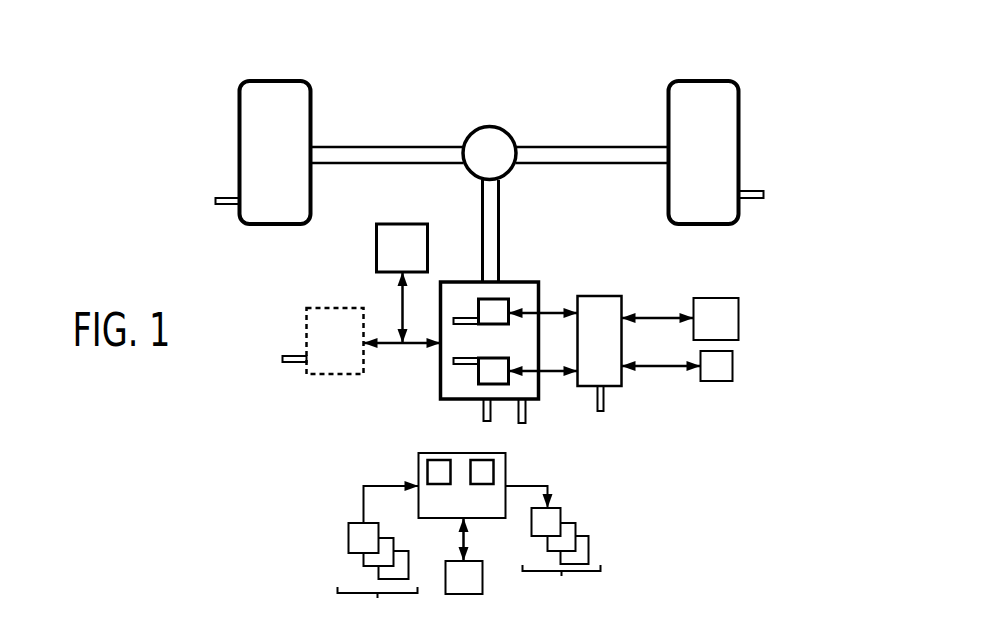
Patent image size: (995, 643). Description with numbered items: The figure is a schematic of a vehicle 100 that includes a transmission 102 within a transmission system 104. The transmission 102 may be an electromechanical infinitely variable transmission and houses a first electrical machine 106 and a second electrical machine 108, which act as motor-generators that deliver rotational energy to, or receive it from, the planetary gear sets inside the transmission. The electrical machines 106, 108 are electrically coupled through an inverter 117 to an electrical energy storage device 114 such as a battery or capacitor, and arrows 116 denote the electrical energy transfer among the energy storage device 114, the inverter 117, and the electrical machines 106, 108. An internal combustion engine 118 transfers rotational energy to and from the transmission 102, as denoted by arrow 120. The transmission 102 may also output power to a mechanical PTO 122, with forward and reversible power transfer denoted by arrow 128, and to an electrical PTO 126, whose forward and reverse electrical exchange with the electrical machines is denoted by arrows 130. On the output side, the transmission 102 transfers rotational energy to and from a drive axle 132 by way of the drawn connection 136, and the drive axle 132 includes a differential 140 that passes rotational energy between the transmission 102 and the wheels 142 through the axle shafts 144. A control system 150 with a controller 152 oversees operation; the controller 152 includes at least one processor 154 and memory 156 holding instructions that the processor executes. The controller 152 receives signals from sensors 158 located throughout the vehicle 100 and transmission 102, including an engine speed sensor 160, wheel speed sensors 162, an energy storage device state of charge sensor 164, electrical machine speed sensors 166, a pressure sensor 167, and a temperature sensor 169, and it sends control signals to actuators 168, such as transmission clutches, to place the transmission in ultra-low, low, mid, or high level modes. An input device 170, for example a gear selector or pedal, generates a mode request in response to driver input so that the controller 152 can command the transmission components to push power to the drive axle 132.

The vehicle 100 is at (851, 44).
The transmission 102 is at (523, 281).
The transmission system 104 is at (270, 306).
The first electrical machine 106 is at (478, 369).
The second electrical machine 108 is at (478, 309).
The electrical energy storage device 114 is at (739, 336).
The arrows 116 is at (543, 311).
The inverter 117 is at (600, 295).
The internal combustion engine 118 is at (314, 374).
The arrow 120 is at (406, 348).
The mechanical PTO 122 is at (376, 262).
The electrical PTO 126 is at (716, 381).
The arrow 128 is at (396, 306).
The arrows 130 is at (660, 368).
The drive axle 132 is at (546, 116).
The drive shaft 136 is at (500, 204).
The differential 140 is at (487, 125).
The wheels 142 is at (268, 80).
The axle shafts 144 is at (373, 145).
The control system 150 is at (578, 480).
The controller 152 is at (423, 452).
The processor 154 is at (427, 468).
The memory 156 is at (493, 472).
The sensors 158 is at (378, 554).
The engine speed sensor 160 is at (292, 362).
The wheel speed sensors 162 is at (222, 205).
The energy storage device state of charge sensor 164 is at (603, 402).
The electrical machine speed sensors 166 is at (466, 325).
The pressure sensor 167 is at (527, 410).
The actuators 168 is at (553, 548).
The temperature sensor 169 is at (491, 410).
The input device 170 is at (463, 593).